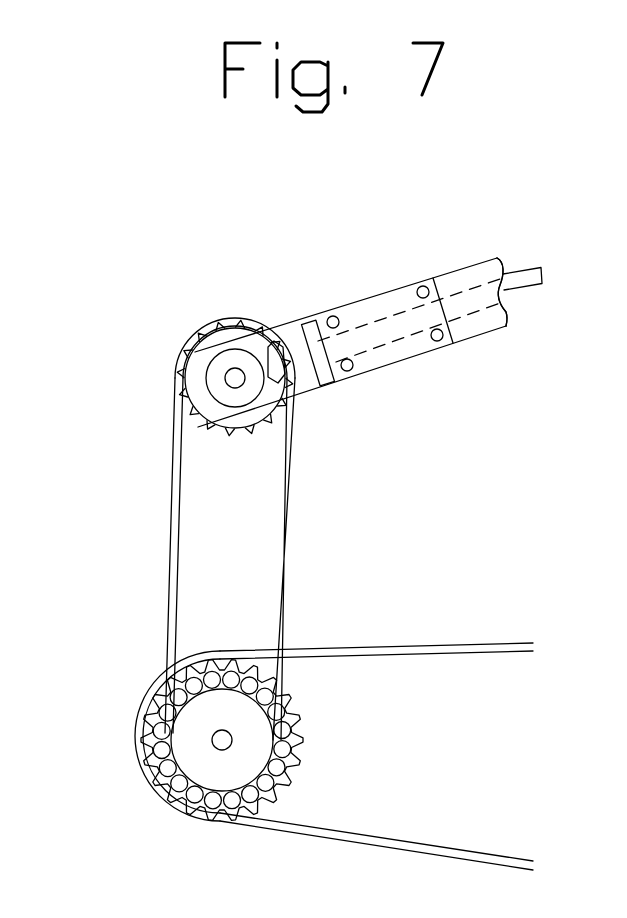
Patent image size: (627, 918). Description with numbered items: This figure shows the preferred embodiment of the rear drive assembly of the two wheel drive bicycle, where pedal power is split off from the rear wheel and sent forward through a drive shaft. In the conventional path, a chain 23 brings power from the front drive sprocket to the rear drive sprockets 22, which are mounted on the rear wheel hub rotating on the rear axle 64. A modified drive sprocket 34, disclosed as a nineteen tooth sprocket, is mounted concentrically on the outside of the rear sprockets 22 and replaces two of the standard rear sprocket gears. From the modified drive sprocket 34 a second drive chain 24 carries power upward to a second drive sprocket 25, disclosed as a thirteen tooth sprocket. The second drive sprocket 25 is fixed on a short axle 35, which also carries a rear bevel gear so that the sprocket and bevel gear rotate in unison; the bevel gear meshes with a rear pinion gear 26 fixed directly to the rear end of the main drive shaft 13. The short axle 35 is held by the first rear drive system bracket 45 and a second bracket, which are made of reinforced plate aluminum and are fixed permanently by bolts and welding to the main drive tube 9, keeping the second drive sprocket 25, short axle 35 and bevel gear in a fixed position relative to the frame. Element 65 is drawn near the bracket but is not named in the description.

The main drive tube 9 is at (499, 328).
The main drive shaft 13 is at (518, 270).
The rear drive sprockets 22 is at (303, 750).
The chain 23 is at (515, 653).
The second drive chain 24 is at (289, 538).
The second drive sprocket 25 is at (198, 355).
The rear pinion gear 26 is at (284, 341).
The modified drive sprocket 34 is at (208, 765).
The short axle 35 is at (225, 381).
The first rear drive system bracket 45 is at (377, 367).
The rear axle 64 is at (212, 739).
The clamp 65 is at (330, 383).